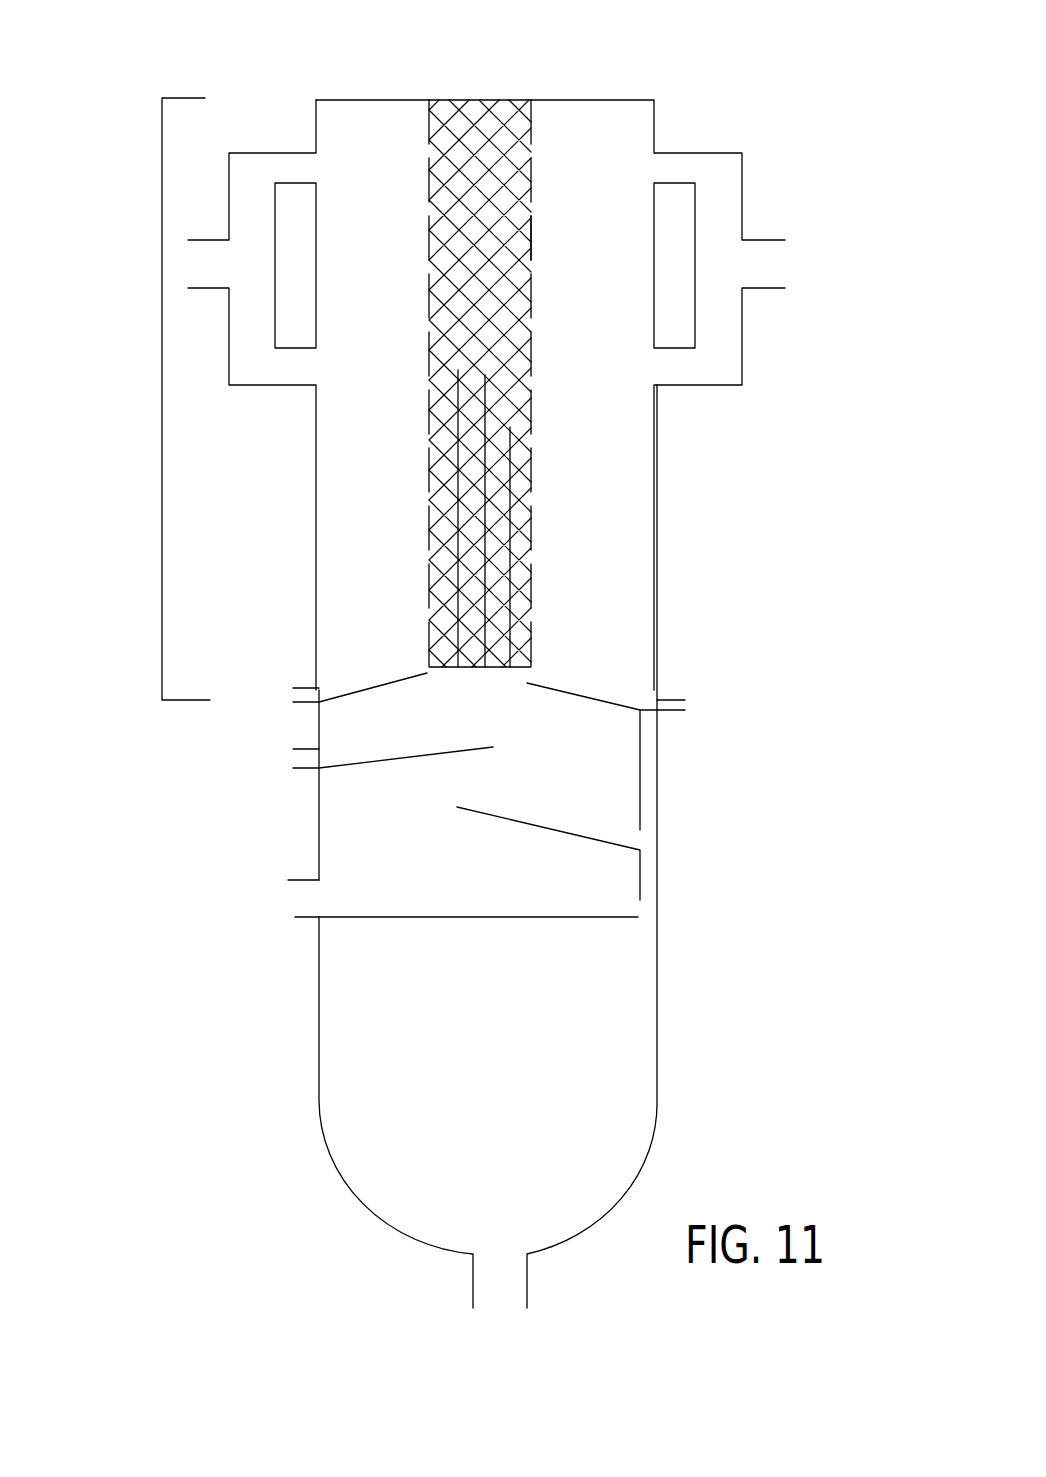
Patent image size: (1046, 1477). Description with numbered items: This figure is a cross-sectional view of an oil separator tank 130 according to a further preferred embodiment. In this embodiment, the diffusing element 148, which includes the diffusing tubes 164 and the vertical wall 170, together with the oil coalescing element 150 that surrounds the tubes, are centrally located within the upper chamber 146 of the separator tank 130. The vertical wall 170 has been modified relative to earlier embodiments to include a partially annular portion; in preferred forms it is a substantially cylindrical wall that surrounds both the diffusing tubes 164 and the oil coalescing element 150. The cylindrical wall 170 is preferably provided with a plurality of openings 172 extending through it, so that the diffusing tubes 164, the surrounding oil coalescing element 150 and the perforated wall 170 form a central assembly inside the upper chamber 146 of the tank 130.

The separator tank 130 is at (910, 103).
The upper chamber 146 is at (160, 402).
The diffusing element 148 is at (532, 117).
The oil coalescing element 150 is at (487, 112).
The diffusing tubes 164 is at (495, 547).
The vertical wall 170 is at (427, 118).
The openings 172 is at (537, 205).